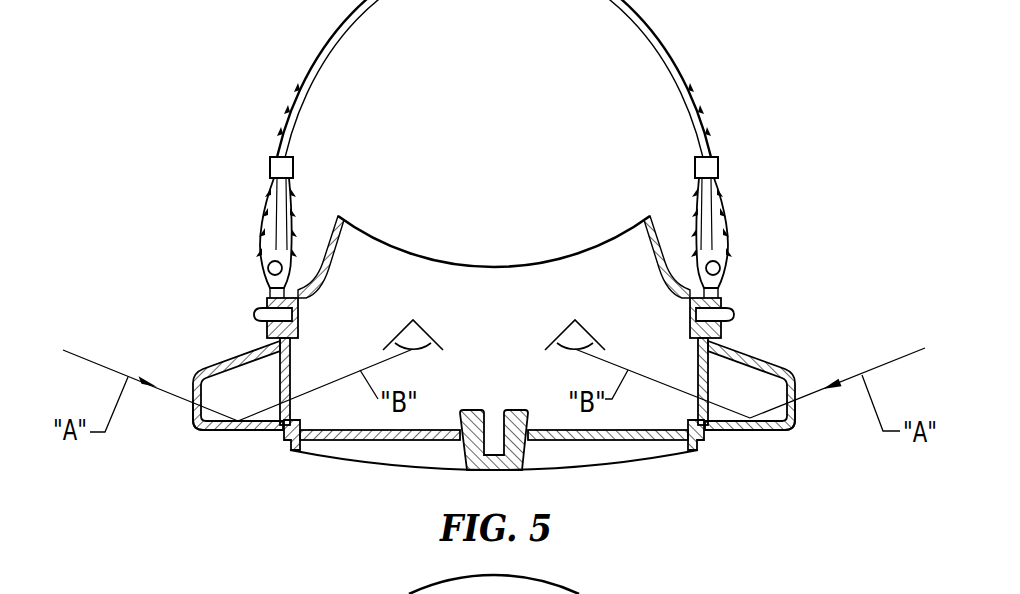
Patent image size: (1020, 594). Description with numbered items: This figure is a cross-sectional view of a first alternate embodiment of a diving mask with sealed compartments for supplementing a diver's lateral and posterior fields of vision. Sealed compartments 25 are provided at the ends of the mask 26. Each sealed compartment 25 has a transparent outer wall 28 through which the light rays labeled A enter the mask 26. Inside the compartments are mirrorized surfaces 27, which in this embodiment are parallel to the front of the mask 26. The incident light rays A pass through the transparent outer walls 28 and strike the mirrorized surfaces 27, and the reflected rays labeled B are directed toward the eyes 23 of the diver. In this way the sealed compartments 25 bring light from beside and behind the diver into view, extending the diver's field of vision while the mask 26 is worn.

The eyes 23 is at (413, 349).
The sealed compartments 25 is at (237, 360).
The mask 26 is at (358, 516).
The mirrorized surfaces 27 is at (267, 420).
The transparent outer walls 28 is at (192, 413).